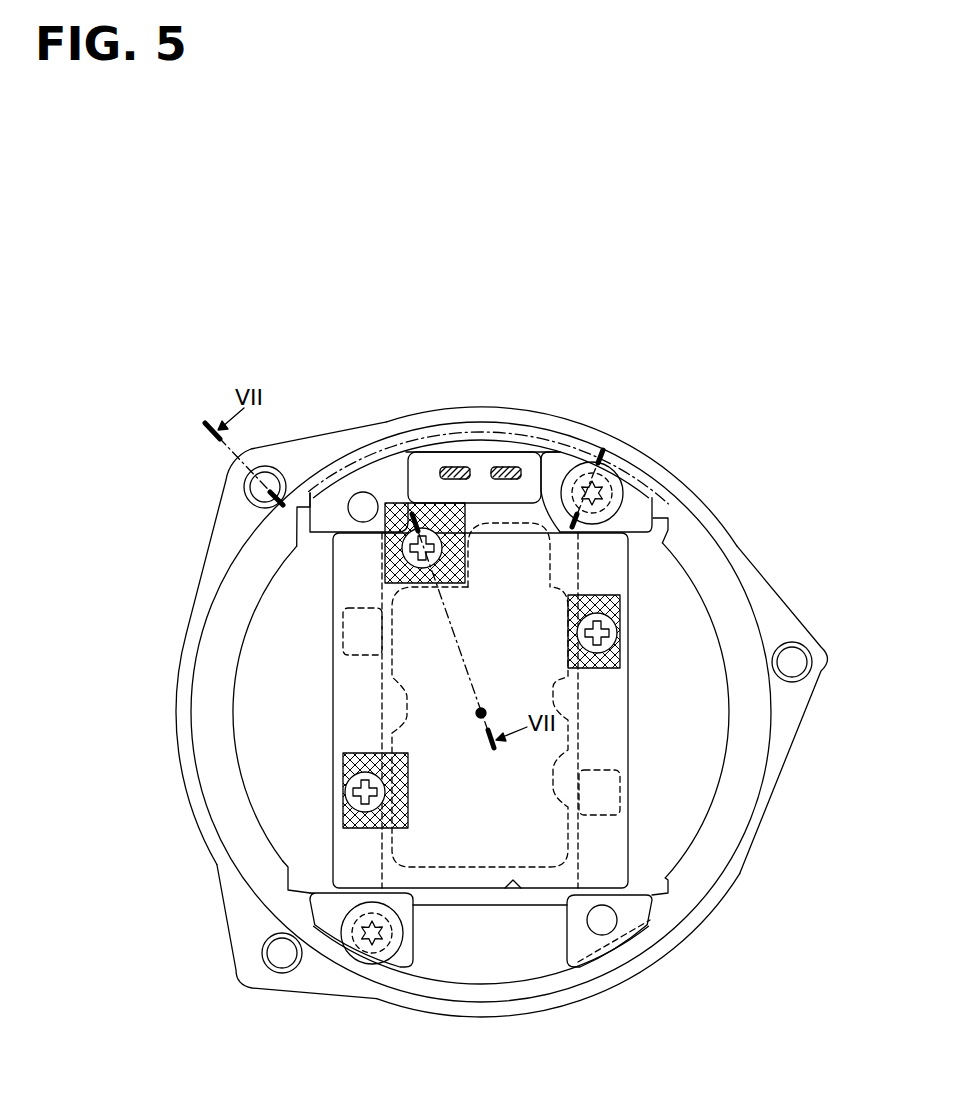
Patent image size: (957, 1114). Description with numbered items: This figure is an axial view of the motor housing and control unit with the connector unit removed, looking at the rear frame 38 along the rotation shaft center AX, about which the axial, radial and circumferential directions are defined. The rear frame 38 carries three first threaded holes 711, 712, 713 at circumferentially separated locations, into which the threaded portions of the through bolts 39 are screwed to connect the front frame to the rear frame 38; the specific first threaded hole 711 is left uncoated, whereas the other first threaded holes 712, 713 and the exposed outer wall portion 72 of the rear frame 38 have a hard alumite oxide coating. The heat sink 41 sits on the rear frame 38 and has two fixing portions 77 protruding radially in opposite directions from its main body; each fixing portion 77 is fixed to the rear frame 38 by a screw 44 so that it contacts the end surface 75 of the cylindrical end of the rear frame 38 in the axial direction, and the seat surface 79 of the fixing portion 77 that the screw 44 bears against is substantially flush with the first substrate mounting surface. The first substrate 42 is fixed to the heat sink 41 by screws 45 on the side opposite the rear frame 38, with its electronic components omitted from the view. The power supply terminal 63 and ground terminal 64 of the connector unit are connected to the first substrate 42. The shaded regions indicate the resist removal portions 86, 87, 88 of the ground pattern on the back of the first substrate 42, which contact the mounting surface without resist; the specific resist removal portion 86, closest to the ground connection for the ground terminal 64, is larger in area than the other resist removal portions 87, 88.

The rear frame 38 is at (225, 540).
The through bolt 39 is at (262, 490).
The heat sink 41 is at (488, 905).
The first substrate 42 is at (343, 688).
The screw 44 is at (612, 477).
The screw 45 is at (400, 547).
The power supply terminal 63 is at (455, 468).
The ground terminal 64 is at (505, 468).
The outer wall portion 72 is at (392, 421).
The end surface 75 is at (748, 789).
The fixing portion 77 is at (640, 502).
The seat surface 79 is at (637, 518).
The resist removal portion 86 is at (383, 570).
The resist removal portion 87 is at (617, 598).
The resist removal portion 88 is at (347, 832).
The first threaded hole 711 is at (280, 470).
The first threaded hole 712 is at (810, 678).
The first threaded hole 713 is at (288, 967).
The rotation shaft center AX is at (478, 716).